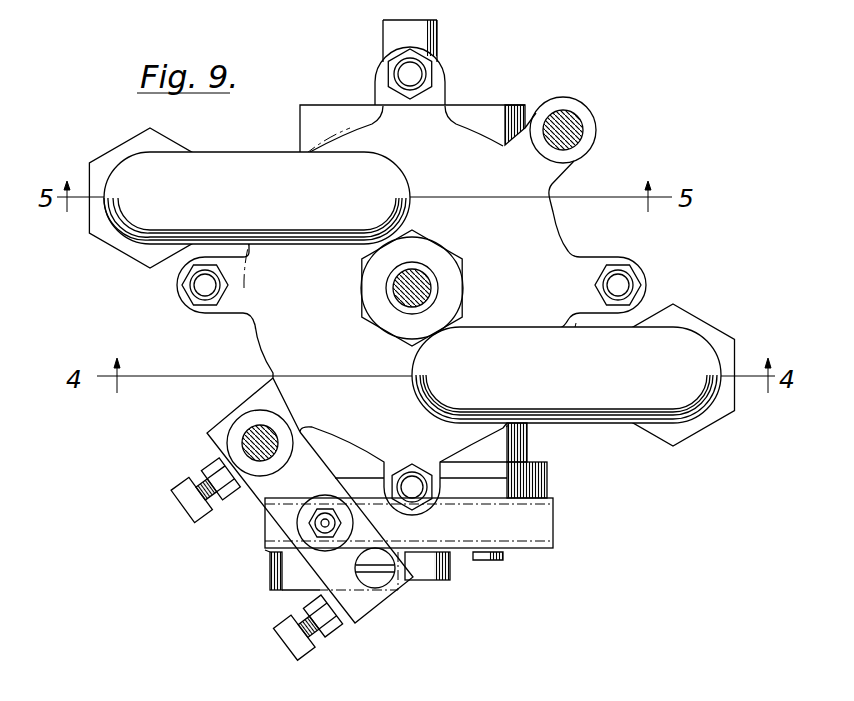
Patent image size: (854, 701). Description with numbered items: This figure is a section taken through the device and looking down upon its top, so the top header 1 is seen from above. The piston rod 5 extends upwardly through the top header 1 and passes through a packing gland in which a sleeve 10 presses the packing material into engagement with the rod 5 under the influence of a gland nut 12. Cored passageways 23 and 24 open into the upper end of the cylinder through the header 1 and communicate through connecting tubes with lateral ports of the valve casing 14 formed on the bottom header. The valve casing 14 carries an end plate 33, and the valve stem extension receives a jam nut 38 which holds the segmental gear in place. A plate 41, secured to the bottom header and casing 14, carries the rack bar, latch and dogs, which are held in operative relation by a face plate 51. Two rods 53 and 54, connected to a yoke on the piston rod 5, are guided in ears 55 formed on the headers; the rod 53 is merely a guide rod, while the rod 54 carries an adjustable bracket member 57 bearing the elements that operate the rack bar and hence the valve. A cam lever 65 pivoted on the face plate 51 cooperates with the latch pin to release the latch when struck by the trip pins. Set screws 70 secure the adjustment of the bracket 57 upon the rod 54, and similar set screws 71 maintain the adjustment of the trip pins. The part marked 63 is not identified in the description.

The top header 1 is at (411, 267).
The piston rod 5 is at (432, 280).
The sleeve 10 is at (438, 291).
The gland nut 12 is at (370, 288).
The valve casing 14 is at (527, 442).
The cored passageway 23 is at (573, 388).
The cored passageway 24 is at (249, 189).
The end plate 33 is at (549, 487).
The jam nut 38 is at (449, 575).
The plate 41 is at (545, 525).
The face plate 51 is at (527, 548).
The guide rod 53 is at (576, 118).
The rod 54 is at (242, 443).
The ears 55 is at (596, 131).
The bracket member 57 is at (310, 500).
The valve 63 is at (320, 527).
The cam lever 65 is at (288, 578).
The set screws 70 is at (178, 498).
The set screws 71 is at (293, 640).